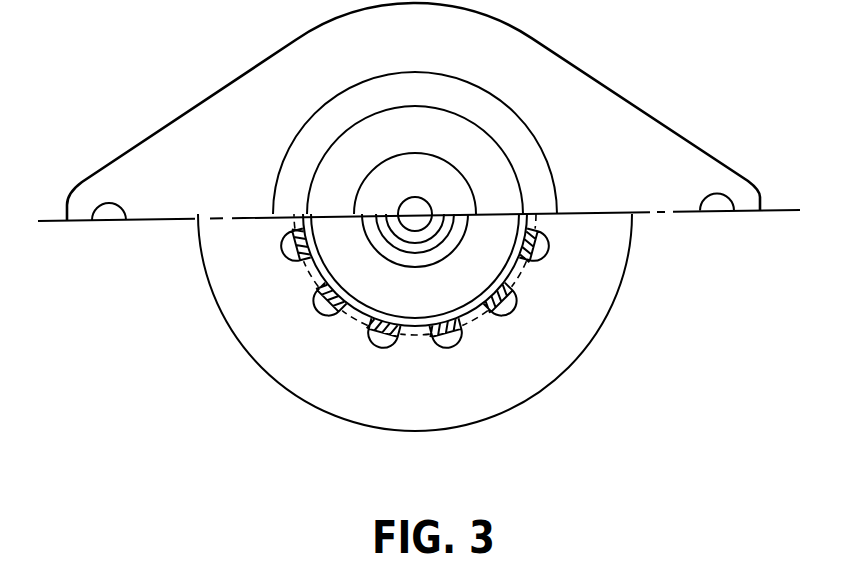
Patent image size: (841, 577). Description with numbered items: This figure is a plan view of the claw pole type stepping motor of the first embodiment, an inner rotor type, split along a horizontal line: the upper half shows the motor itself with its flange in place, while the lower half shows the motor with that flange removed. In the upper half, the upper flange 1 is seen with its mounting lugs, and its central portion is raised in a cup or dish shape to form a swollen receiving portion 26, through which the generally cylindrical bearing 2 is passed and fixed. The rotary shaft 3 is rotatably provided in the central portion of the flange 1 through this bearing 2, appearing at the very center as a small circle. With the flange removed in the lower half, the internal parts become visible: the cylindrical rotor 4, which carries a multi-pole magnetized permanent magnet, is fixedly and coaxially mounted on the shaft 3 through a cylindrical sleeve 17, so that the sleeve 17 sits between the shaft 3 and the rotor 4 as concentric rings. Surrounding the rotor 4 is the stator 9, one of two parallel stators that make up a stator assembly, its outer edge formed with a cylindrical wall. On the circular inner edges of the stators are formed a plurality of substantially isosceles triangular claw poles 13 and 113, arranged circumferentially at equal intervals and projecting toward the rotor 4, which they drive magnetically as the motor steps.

The flange 1 is at (527, 70).
The bearing 2 is at (380, 182).
The rotary shaft 3 is at (425, 205).
The rotor 4 is at (330, 256).
The stator 9 is at (270, 340).
The claw poles 13 is at (425, 333).
The sleeve 17 is at (403, 257).
The receiving portion 26 is at (322, 158).
The claw poles 113 is at (457, 347).